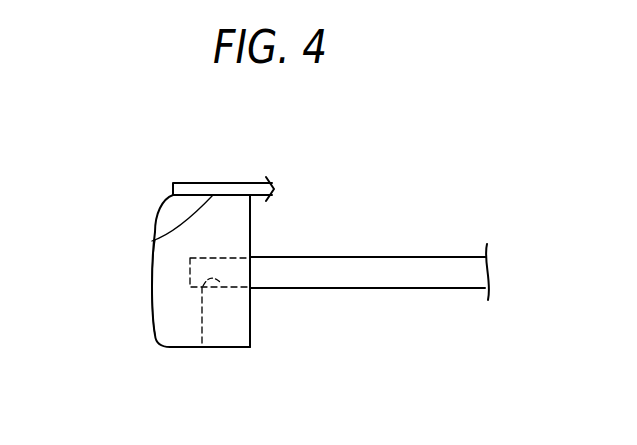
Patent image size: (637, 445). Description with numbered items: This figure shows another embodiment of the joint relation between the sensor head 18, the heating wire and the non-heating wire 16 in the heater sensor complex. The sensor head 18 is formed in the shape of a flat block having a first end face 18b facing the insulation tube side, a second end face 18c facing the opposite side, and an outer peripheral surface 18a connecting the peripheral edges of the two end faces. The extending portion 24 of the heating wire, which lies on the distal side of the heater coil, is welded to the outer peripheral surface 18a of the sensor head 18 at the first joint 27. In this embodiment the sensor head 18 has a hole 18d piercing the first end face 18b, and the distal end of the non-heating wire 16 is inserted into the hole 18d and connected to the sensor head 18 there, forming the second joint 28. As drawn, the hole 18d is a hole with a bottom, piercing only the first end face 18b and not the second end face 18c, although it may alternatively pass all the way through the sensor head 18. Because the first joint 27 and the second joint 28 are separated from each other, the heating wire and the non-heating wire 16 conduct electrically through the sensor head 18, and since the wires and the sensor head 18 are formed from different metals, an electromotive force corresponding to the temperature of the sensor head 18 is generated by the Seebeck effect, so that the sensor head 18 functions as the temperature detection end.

The sensor head 18 is at (150, 224).
The extending portion 24 is at (237, 183).
The first joint 27 is at (152, 241).
The second end face 18c is at (150, 297).
The second joint 28 is at (233, 257).
The non-heating wire 16 is at (413, 257).
The hole 18d is at (201, 350).
The outer peripheral surface 18a is at (233, 350).
The first end face 18b is at (252, 322).